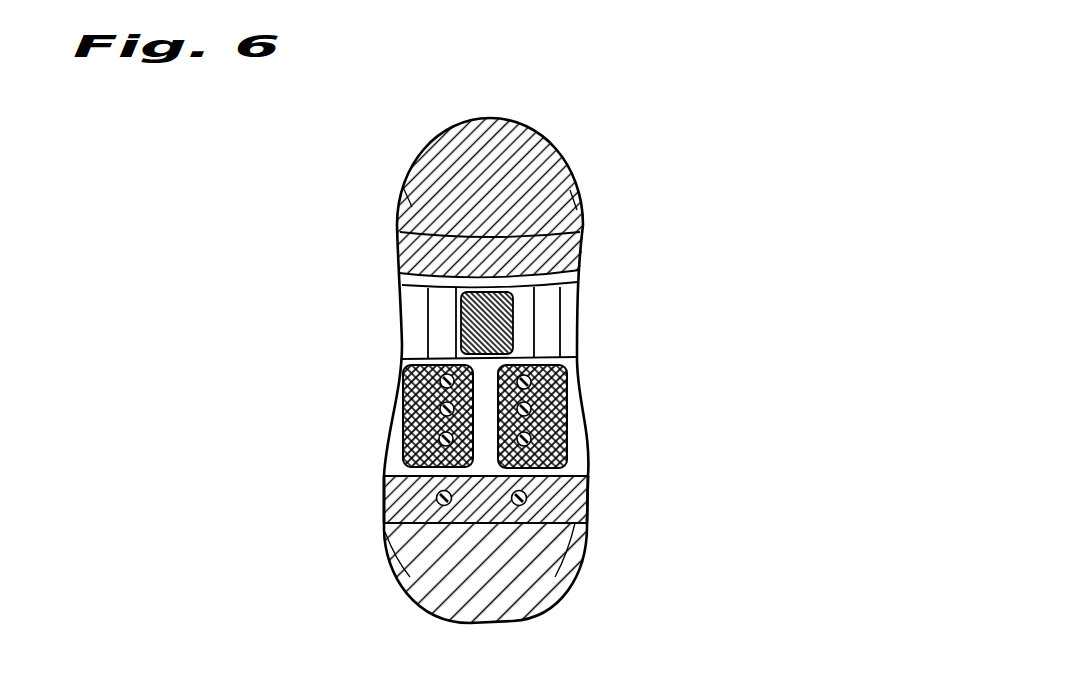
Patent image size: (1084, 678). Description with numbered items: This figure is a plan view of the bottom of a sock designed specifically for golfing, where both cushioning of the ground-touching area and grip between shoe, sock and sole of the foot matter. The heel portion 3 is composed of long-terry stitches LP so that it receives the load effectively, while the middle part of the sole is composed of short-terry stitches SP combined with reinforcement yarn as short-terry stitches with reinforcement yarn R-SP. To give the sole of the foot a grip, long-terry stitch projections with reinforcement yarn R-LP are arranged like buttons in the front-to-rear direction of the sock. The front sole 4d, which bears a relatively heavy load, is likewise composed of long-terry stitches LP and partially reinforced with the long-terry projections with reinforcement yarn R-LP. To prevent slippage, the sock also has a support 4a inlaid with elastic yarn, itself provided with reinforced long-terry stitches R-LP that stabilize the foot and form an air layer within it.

The heel portion 3 is at (490, 170).
The long-terry stitches LP is at (553, 161).
The short-terry stitches SP is at (521, 584).
The long-terry stitch projections with reinforcement yarn R-LP is at (473, 324).
The short-terry stitches with reinforcement yarn R-SP is at (559, 430).
The support 4a is at (574, 319).
The front sole 4d is at (417, 508).